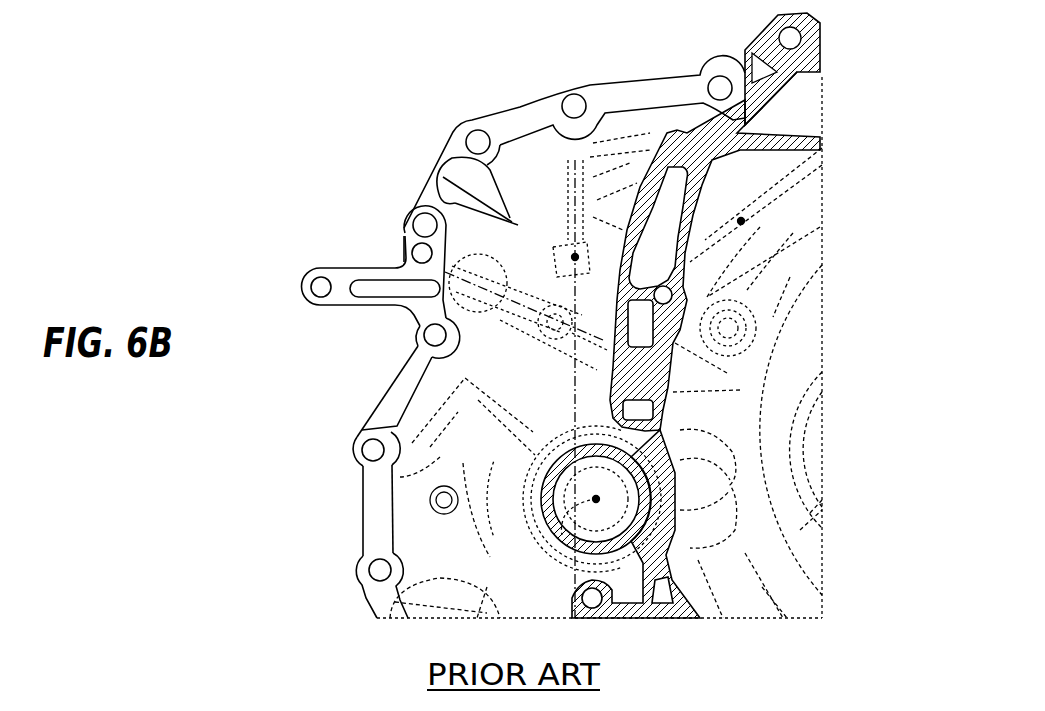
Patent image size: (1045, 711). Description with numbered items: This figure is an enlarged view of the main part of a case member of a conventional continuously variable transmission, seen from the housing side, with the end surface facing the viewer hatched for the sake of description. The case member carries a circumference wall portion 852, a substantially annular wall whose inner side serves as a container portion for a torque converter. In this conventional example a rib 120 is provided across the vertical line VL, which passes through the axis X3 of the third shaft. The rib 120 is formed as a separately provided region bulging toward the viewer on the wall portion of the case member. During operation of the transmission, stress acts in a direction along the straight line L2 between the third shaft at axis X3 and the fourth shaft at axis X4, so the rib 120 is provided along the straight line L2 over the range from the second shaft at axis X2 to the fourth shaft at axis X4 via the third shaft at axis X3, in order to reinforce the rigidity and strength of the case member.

The circumference wall portion 852 is at (822, 48).
The axis of the second shaft X2 is at (741, 221).
The axis of the third shaft X3 is at (567, 243).
The axis of the fourth shaft X4 is at (545, 533).
The straight line L2 is at (421, 261).
The rib 120 is at (520, 316).
The vertical line VL is at (571, 374).